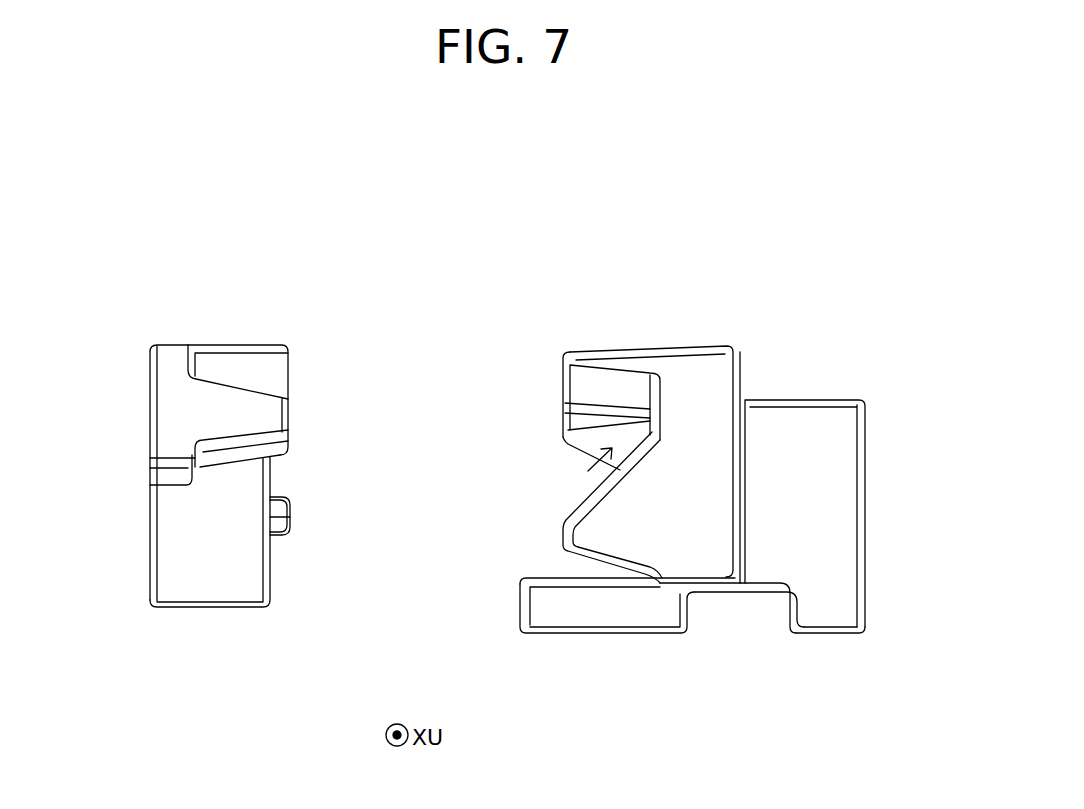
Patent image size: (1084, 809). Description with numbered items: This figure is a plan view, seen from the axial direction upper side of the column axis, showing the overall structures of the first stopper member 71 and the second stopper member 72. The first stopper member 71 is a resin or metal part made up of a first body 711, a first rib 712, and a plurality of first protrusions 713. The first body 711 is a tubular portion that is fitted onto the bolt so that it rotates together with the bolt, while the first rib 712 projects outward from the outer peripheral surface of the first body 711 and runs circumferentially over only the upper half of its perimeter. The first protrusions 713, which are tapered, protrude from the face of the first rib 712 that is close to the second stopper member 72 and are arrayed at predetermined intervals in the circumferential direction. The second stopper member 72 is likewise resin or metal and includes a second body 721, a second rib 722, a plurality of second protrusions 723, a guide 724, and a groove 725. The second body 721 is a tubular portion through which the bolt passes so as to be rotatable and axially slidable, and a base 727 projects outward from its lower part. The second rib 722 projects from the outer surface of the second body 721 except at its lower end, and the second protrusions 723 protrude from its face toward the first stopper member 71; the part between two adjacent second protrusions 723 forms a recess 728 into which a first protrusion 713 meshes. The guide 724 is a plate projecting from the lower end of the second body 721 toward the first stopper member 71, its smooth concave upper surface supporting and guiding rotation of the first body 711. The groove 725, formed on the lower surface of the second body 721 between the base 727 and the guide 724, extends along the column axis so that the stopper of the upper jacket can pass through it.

The first stopper member 71 is at (148, 330).
The first body 711 is at (210, 580).
The first rib 712 is at (170, 432).
The first protrusions 713 is at (237, 353).
The second stopper member 72 is at (770, 265).
The second body 721 is at (833, 442).
The second rib 722 is at (707, 355).
The second protrusions 723 is at (598, 355).
The guide 724 is at (598, 615).
The groove 725 is at (762, 592).
The base 727 is at (828, 617).
The recess 728 is at (590, 468).